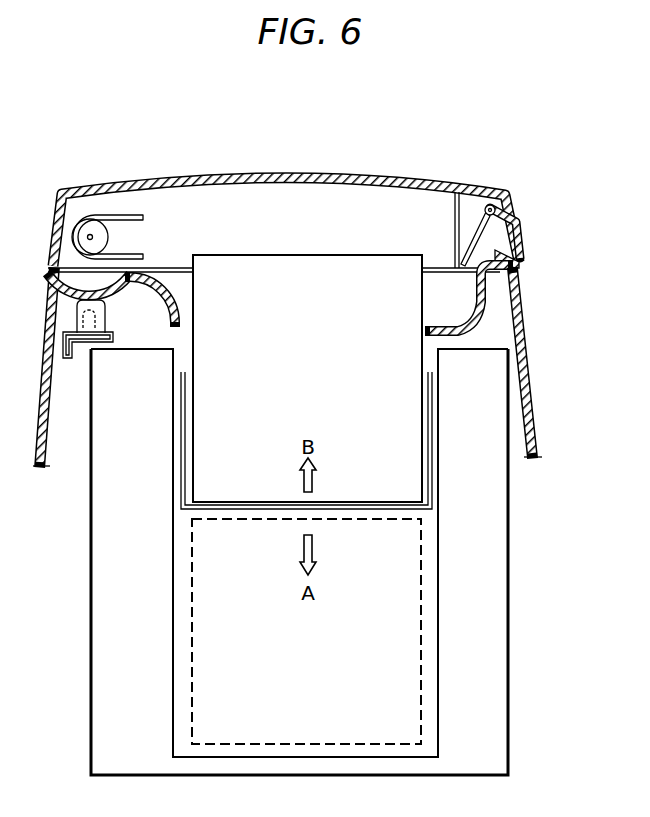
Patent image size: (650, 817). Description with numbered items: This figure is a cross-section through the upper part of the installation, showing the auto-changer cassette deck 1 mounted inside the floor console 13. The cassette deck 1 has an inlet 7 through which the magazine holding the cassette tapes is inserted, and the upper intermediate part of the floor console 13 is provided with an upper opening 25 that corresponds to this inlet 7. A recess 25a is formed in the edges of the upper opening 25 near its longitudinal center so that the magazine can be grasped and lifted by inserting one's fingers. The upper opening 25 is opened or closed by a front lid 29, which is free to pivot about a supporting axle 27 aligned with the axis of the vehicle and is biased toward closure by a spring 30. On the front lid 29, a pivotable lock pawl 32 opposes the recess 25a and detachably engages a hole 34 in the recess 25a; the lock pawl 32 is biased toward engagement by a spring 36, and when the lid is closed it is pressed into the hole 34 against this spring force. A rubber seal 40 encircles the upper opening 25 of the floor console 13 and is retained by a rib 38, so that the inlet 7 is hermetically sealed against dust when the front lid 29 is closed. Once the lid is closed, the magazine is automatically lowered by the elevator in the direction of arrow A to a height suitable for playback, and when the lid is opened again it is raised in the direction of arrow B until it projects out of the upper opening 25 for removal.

The auto-changer cassette deck 1 is at (84, 632).
The inlet 7 is at (185, 352).
The floor console 13 is at (533, 402).
The upper opening 25 is at (173, 317).
The recess 25a is at (147, 293).
The supporting axle 27 is at (90, 237).
The front lid 29 is at (320, 173).
The spring 30 is at (130, 215).
The lock pawl 32 is at (517, 221).
The hole 34 is at (480, 312).
The spring 36 is at (466, 188).
The rib 38 is at (516, 250).
The rubber seal 40 is at (516, 272).